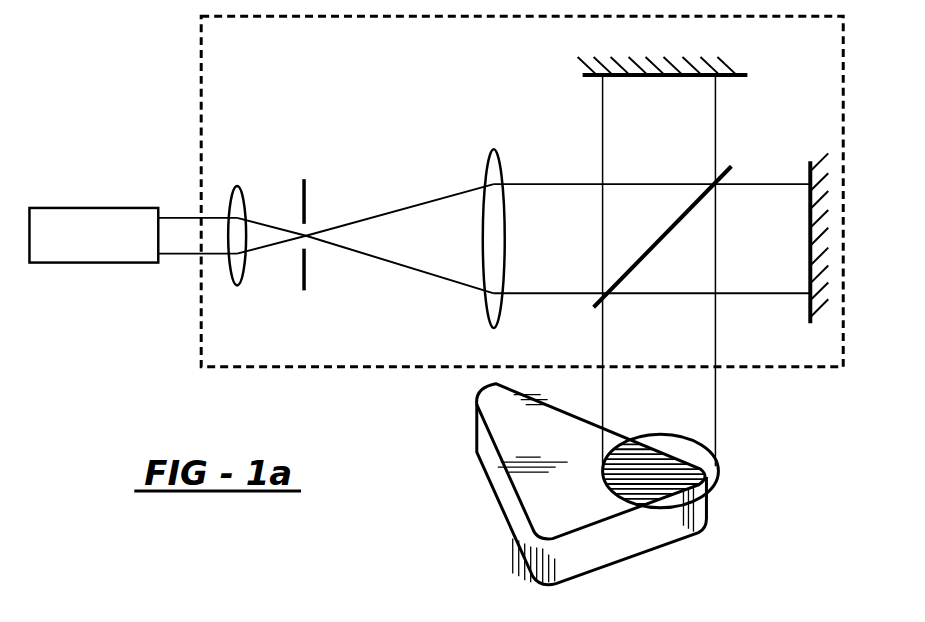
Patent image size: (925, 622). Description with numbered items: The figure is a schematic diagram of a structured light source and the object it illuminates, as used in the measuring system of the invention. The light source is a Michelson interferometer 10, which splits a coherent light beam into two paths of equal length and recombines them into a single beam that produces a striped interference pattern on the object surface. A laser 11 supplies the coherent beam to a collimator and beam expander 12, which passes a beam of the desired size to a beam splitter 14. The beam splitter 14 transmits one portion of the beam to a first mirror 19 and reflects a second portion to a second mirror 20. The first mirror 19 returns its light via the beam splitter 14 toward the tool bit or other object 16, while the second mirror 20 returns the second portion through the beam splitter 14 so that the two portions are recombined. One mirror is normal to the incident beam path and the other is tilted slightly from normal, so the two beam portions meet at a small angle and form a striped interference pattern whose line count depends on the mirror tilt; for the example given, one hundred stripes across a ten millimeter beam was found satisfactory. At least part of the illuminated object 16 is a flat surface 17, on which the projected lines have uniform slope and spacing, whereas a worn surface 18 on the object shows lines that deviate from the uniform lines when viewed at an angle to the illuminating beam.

The Michelson interferometer 10 is at (200, 87).
The laser 11 is at (80, 207).
The collimator and beam expander 12 is at (331, 208).
The beam splitter 14 is at (732, 170).
The object 16 is at (583, 484).
The flat surface 17 is at (553, 492).
The worn surface 18 is at (672, 462).
The first mirror 19 is at (810, 300).
The second mirror 20 is at (592, 77).